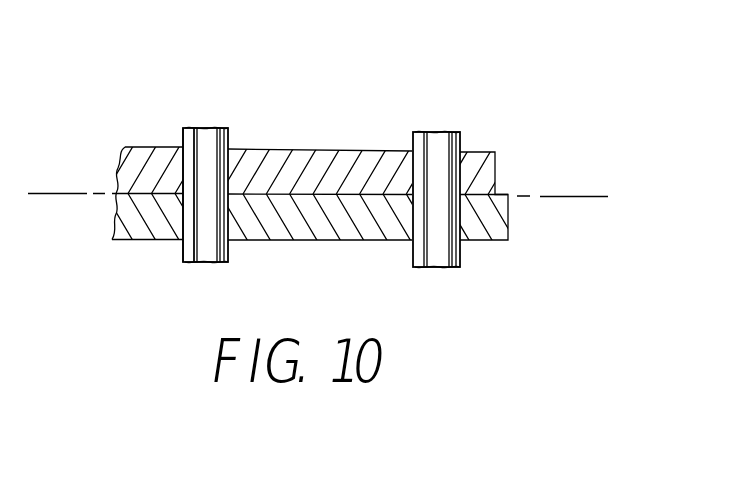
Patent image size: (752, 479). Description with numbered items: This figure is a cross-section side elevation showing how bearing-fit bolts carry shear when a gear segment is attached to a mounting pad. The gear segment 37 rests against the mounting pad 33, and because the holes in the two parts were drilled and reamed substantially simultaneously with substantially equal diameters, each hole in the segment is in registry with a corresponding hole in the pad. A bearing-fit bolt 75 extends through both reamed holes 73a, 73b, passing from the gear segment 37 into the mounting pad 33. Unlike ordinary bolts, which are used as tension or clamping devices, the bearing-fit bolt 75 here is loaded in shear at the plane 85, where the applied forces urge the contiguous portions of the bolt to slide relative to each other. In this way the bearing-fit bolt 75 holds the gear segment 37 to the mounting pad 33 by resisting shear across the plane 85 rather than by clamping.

The mounting pad 33 is at (508, 218).
The gear segment 37 is at (137, 155).
The bearing-fit bolt 75 is at (218, 143).
The reamed hole 73a is at (230, 147).
The reamed hole 73b is at (181, 240).
The plane 85 is at (567, 196).